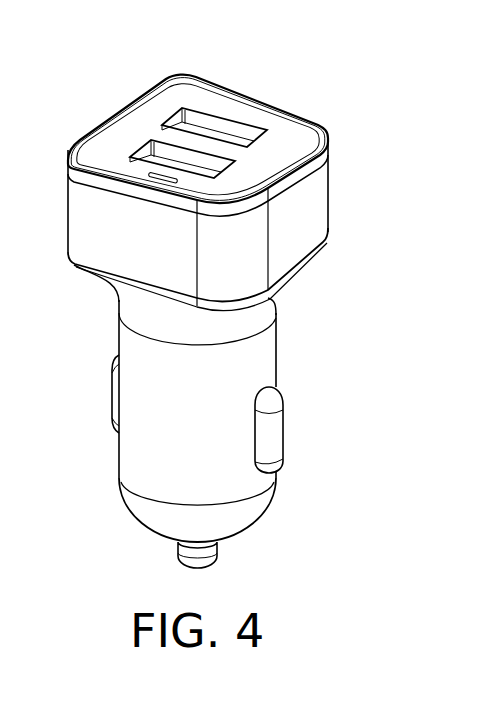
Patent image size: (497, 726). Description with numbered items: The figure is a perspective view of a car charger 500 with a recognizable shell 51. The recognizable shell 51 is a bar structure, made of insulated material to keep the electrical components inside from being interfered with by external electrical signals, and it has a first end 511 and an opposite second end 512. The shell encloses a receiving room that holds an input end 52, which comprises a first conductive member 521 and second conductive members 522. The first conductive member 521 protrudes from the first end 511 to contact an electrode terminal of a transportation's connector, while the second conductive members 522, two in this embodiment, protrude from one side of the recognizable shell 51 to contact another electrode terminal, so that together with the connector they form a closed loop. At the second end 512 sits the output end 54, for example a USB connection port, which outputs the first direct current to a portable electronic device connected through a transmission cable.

The car charger 500 is at (233, 290).
The recognizable shell 51 is at (226, 283).
The first end 511 is at (150, 512).
The second end 512 is at (239, 167).
The input end 52 is at (228, 467).
The first conductive member 521 is at (272, 561).
The second conductive member 522 is at (112, 407).
The output end 54 is at (213, 118).